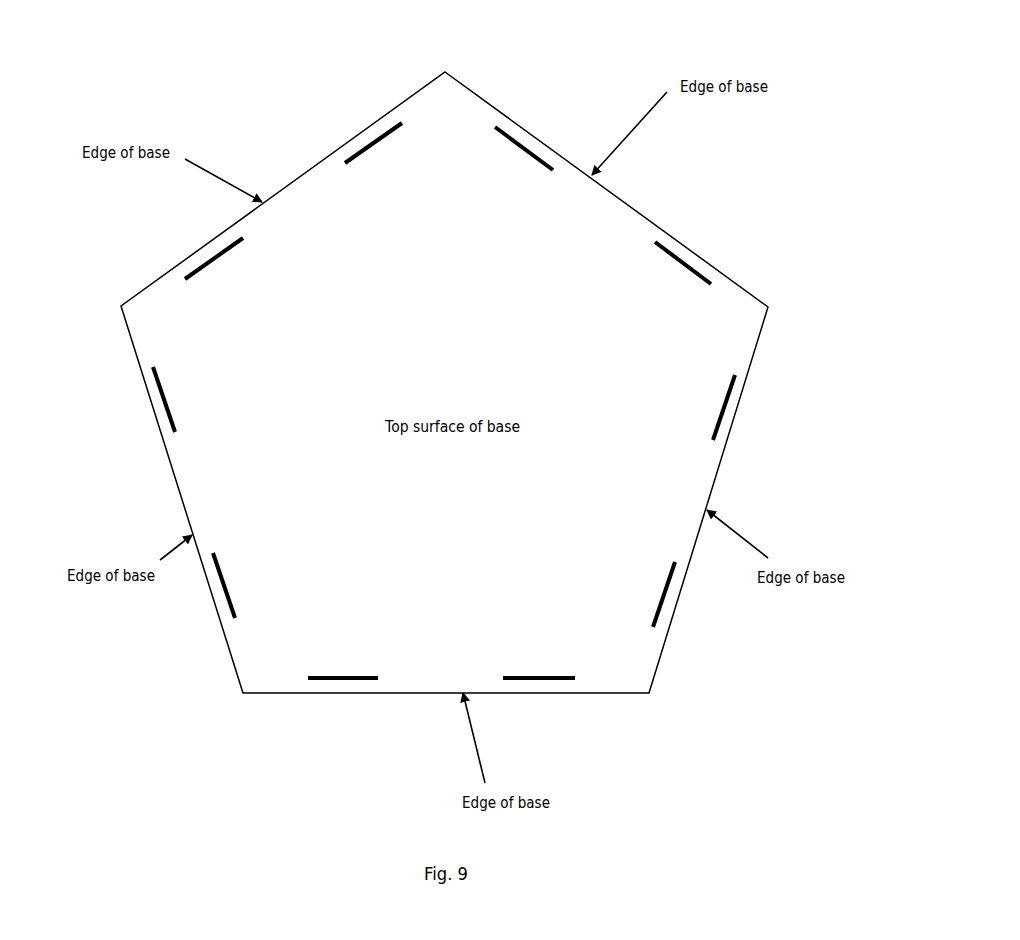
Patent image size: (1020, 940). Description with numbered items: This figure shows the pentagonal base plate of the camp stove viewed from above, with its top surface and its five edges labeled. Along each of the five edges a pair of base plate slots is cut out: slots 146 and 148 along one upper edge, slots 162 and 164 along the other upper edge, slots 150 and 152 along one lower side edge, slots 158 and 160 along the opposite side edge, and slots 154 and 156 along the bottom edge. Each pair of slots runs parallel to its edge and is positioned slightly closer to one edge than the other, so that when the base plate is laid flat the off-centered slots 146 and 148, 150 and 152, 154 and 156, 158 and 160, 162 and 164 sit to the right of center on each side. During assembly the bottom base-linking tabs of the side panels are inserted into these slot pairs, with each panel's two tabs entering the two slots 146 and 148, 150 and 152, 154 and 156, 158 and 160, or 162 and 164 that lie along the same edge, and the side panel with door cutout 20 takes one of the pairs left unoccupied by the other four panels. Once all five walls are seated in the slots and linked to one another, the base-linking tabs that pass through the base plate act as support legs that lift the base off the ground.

The side panel with door cutout 20 is at (237, 100).
The base plate slot 146 is at (375, 138).
The base plate slot 148 is at (222, 253).
The base plate slot 150 is at (160, 393).
The base plate slot 152 is at (220, 585).
The base plate slot 154 is at (340, 680).
The base plate slot 156 is at (538, 680).
The base plate slot 158 is at (667, 593).
The base plate slot 160 is at (730, 405).
The base plate slot 162 is at (680, 255).
The base plate slot 164 is at (515, 138).